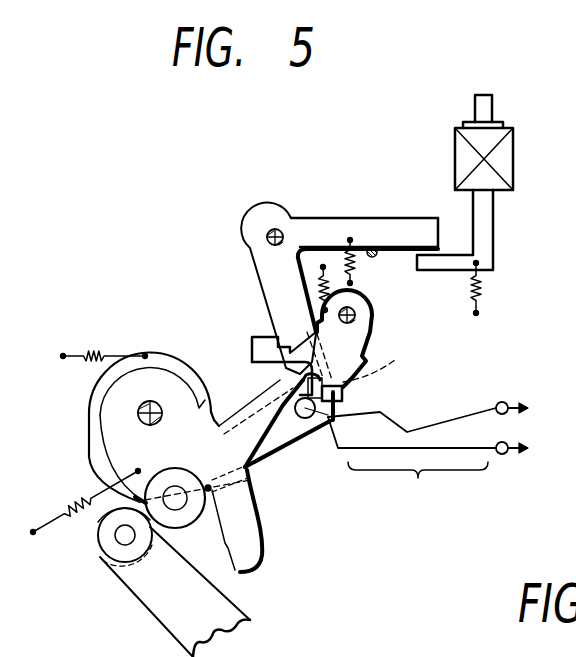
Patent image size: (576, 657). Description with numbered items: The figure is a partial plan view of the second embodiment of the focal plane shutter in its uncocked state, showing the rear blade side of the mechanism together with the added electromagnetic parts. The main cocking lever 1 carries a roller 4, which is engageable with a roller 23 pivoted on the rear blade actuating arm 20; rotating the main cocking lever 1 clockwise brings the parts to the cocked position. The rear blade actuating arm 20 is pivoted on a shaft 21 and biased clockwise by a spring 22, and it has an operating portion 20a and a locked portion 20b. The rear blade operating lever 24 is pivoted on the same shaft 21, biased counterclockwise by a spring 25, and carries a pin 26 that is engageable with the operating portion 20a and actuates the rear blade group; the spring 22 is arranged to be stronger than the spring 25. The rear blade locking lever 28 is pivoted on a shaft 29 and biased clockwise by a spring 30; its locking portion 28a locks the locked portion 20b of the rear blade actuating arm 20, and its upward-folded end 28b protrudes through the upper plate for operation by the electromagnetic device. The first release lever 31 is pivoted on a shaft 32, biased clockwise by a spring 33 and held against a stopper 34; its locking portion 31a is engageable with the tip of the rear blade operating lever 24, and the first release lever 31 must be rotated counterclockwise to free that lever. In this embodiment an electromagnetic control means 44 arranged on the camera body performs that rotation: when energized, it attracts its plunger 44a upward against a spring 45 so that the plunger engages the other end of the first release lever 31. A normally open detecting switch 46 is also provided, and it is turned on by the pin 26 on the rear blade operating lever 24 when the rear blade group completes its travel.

The main cocking lever 1 is at (155, 617).
The roller 4 is at (95, 540).
The rear blade actuating arm 20 is at (269, 480).
The operating portion 20a is at (270, 380).
The locked portion 20b is at (233, 572).
The shaft 21 is at (152, 401).
The spring 22 is at (64, 513).
The roller 23 is at (178, 530).
The rear blade operating lever 24 is at (88, 410).
The spring 25 is at (86, 352).
The pin 26 is at (328, 430).
The rear blade locking lever 28 is at (372, 322).
The locking portion 28a is at (345, 397).
The upward-folded end 28b is at (252, 338).
The shaft 29 is at (356, 315).
The spring 30 is at (316, 262).
The first release lever 31 is at (250, 232).
The locking portion 31a is at (335, 383).
The shaft 32 is at (270, 228).
The spring 33 is at (350, 238).
The stopper 34 is at (376, 256).
The electromagnetic control means 44 is at (515, 134).
The plunger 44a is at (495, 225).
The spring 45 is at (480, 296).
The detecting switch 46 is at (428, 458).